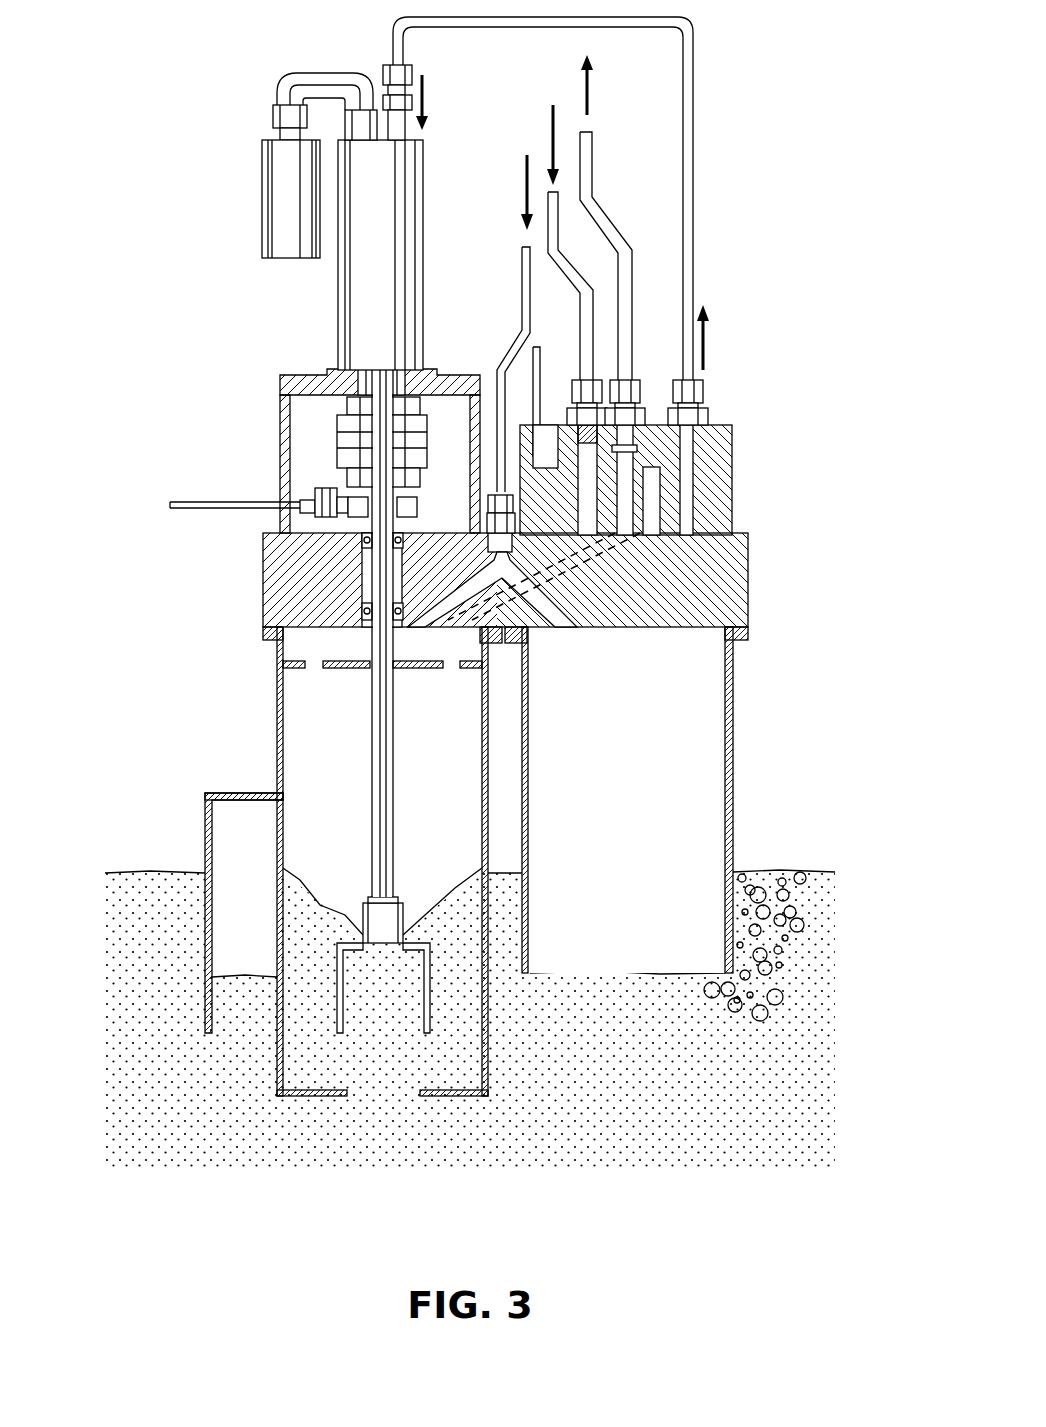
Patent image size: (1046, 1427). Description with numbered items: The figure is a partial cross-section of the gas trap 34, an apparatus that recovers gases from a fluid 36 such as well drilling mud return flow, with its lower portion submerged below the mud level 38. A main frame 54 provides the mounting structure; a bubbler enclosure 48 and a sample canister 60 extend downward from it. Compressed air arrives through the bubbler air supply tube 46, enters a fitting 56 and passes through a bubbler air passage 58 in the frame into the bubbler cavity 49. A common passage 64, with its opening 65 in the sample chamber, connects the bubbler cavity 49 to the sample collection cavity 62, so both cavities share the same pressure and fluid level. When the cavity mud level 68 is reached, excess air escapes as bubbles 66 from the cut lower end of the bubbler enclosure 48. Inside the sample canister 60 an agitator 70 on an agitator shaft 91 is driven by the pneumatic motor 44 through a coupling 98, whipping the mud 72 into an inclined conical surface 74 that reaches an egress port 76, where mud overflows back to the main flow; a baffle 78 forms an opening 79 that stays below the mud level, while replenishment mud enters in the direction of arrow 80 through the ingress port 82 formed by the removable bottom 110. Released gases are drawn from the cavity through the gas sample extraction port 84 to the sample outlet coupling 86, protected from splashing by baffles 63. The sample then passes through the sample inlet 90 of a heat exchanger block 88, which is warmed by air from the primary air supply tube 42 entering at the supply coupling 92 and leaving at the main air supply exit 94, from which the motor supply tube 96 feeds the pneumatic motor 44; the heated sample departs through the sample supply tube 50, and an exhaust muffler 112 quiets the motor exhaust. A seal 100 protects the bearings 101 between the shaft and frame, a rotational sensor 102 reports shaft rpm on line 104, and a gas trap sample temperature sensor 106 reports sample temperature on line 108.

The gas trap 34 is at (220, 112).
The fluid 36 is at (677, 1113).
The mud level 38 is at (120, 873).
The primary air supply tube 42 is at (558, 205).
The pneumatic motor 44 is at (338, 298).
The bubbler air supply tube 46 is at (524, 262).
The bubbler enclosure 48 is at (733, 790).
The bubbler cavity 49 is at (622, 761).
The sample supply tube 50 is at (592, 145).
The main frame 54 is at (748, 598).
The fitting 56 is at (490, 495).
The bubbler air passage 58 is at (623, 537).
The sample canister 60 is at (278, 713).
The sample collection cavity 62 is at (312, 788).
The baffles 63 is at (300, 663).
The common passage 64 is at (575, 627).
The opening 65 is at (425, 627).
The bubbles 66 is at (772, 1000).
The cavity mud level 68 is at (645, 973).
The agitator 70 is at (340, 1040).
The fluid in sample canister 72 is at (432, 1074).
The conical surface 74 is at (340, 920).
The egress port 76 is at (278, 850).
The baffle 78 is at (208, 793).
The opening 79 is at (246, 1032).
The arrow 80 is at (385, 1055).
The ingress port 82 is at (350, 1097).
The gas sample extraction port 84 is at (472, 627).
The sample outlet coupling 86 is at (640, 390).
The heat exchanger block 88 is at (732, 432).
The sample inlet 90 is at (633, 578).
The agitator shaft 91 is at (392, 800).
The supply coupling 92 is at (570, 383).
The main air supply exit 94 is at (705, 393).
The motor supply tube 96 is at (693, 78).
The coupling 98 is at (340, 438).
The seal 100 is at (368, 630).
The bearings 101 is at (362, 538).
The rotational sensor 102 is at (305, 500).
The line 104 is at (180, 503).
The gas trap sample temperature sensor 106 is at (542, 460).
The line 108 is at (537, 357).
The removable bottom 110 is at (445, 1096).
The exhaust muffler 112 is at (270, 183).